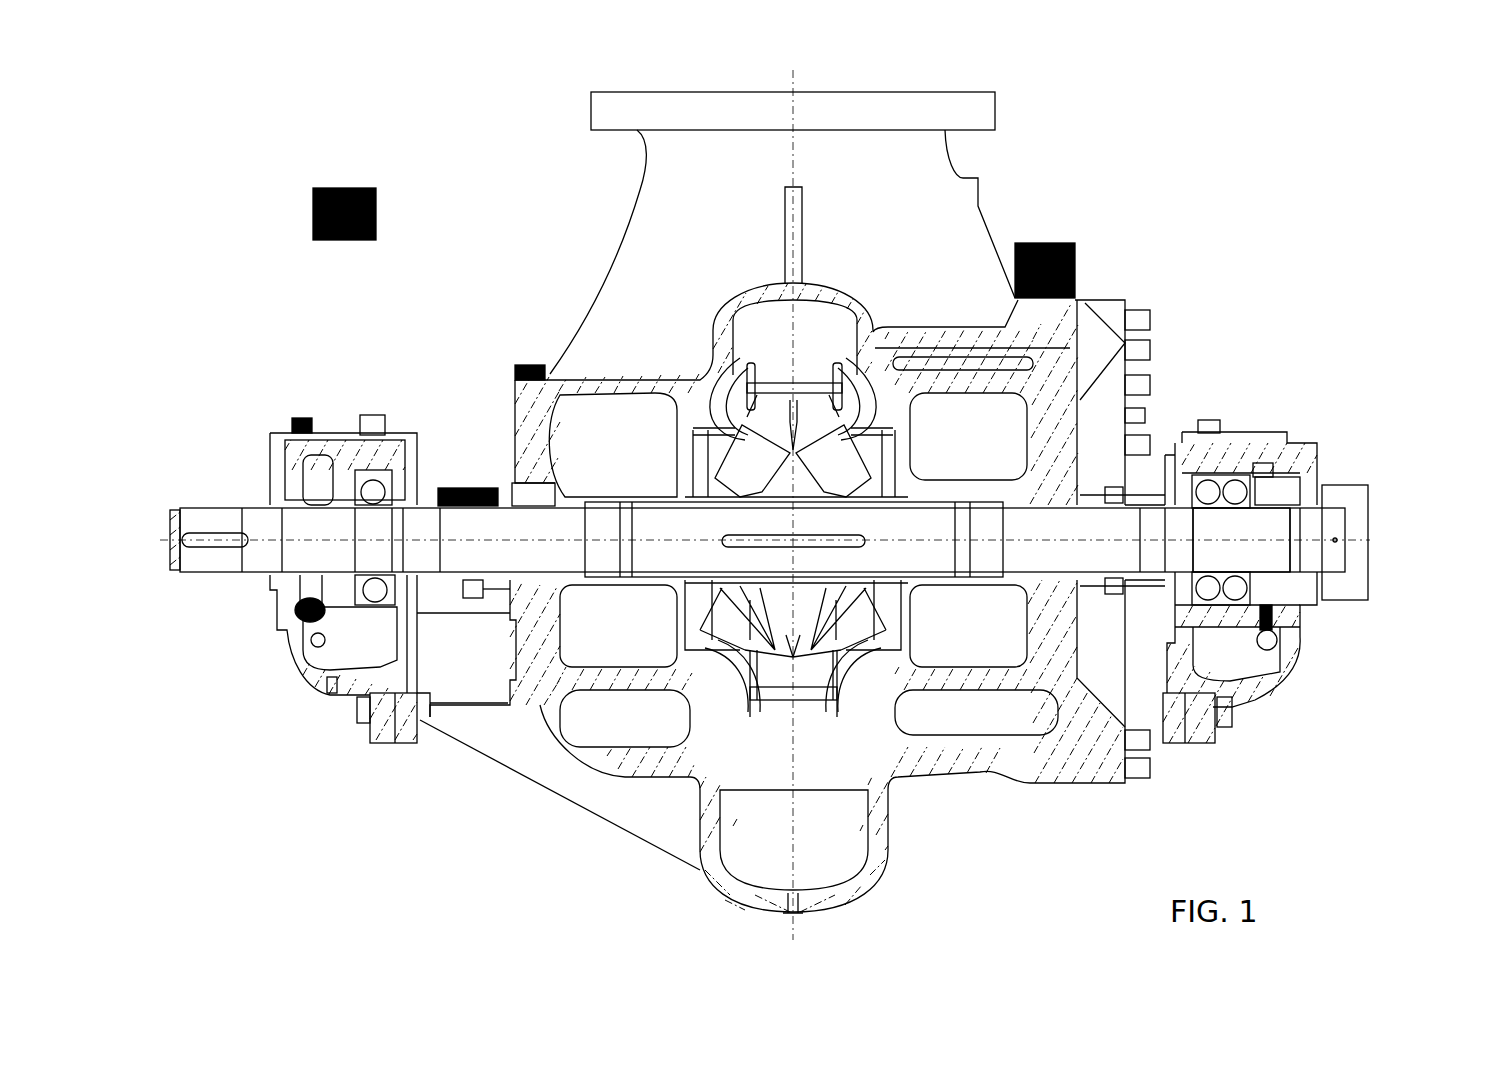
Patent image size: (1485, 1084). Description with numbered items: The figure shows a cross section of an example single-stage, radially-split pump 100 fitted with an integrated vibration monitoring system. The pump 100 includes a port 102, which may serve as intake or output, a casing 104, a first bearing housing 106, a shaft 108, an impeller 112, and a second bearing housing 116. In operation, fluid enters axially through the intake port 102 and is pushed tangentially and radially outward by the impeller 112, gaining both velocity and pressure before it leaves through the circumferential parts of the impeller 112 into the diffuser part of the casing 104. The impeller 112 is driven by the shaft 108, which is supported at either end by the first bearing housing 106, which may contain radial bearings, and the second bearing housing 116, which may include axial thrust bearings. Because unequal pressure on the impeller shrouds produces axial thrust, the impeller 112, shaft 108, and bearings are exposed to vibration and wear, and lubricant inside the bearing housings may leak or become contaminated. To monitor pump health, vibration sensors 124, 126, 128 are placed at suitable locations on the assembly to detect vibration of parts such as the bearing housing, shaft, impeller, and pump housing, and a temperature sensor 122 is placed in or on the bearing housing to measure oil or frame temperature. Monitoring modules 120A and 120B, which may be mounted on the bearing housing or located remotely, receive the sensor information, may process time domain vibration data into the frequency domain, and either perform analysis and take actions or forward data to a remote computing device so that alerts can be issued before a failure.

The single-stage pump 100 is at (786, 497).
The port 102 is at (756, 233).
The casing 104 is at (785, 560).
The first bearing housing 106 is at (311, 633).
The shaft 108 is at (736, 476).
The impeller 112 is at (730, 614).
The second bearing housing 116 is at (1226, 514).
The monitoring module 120A is at (1138, 204).
The monitoring module 120B is at (266, 147).
The temperature sensor 122 is at (219, 673).
The vibration sensor 124 is at (212, 355).
The vibration sensor 126 is at (394, 409).
The vibration sensor 128 is at (473, 326).